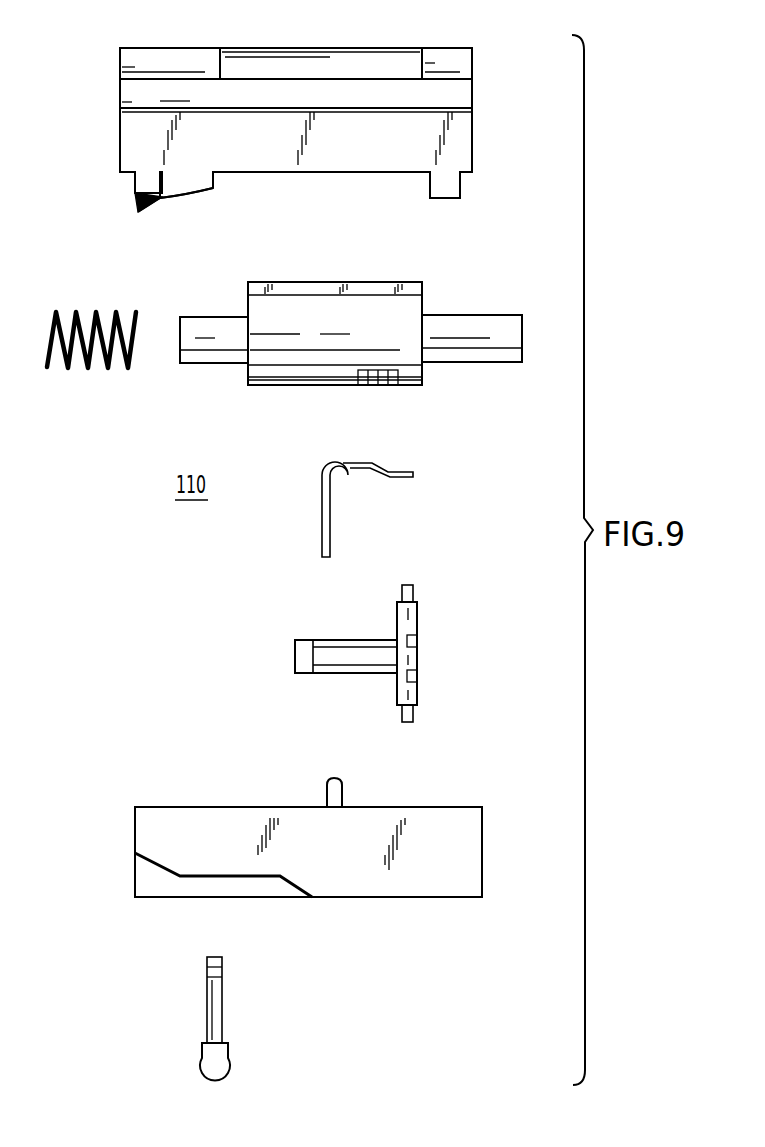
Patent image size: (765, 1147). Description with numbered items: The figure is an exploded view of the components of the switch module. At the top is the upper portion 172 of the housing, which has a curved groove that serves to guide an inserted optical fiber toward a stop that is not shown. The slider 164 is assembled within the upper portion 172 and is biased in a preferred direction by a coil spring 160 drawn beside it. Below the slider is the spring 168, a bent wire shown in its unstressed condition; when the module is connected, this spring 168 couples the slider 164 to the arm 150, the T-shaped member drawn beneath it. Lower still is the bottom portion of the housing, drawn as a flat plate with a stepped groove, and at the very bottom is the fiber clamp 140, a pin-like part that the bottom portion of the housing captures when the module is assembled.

The fiber clamp 140 is at (198, 1062).
The arm 150 is at (325, 639).
The spring 160 is at (112, 370).
The slider 164 is at (328, 386).
The spring 168 is at (320, 490).
The upper portion 172 is at (293, 47).